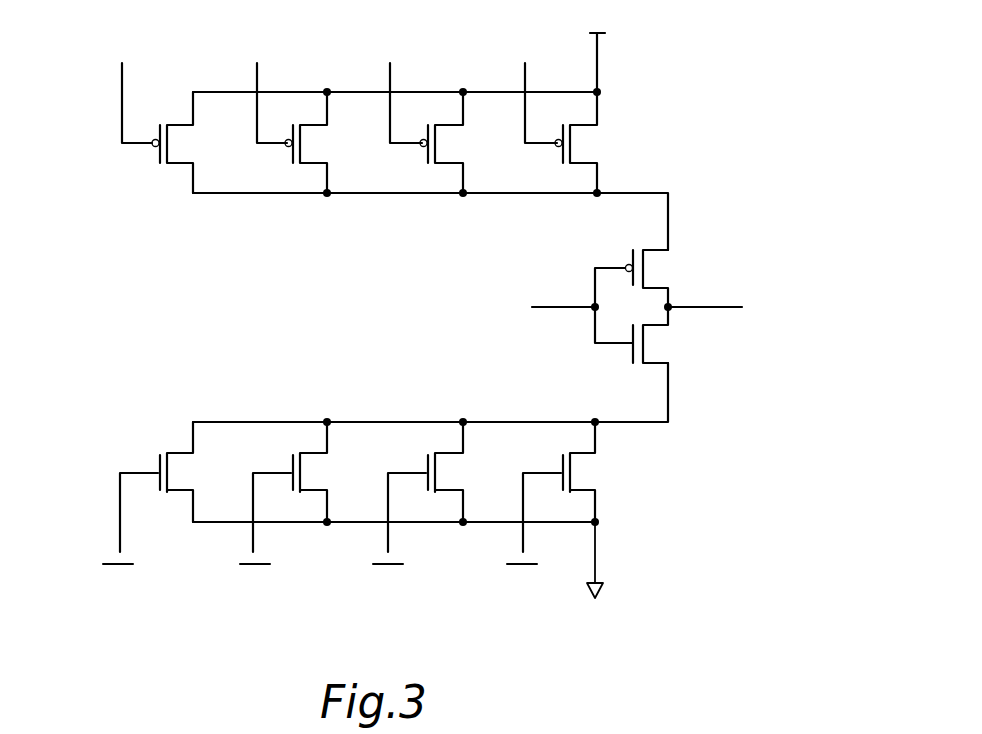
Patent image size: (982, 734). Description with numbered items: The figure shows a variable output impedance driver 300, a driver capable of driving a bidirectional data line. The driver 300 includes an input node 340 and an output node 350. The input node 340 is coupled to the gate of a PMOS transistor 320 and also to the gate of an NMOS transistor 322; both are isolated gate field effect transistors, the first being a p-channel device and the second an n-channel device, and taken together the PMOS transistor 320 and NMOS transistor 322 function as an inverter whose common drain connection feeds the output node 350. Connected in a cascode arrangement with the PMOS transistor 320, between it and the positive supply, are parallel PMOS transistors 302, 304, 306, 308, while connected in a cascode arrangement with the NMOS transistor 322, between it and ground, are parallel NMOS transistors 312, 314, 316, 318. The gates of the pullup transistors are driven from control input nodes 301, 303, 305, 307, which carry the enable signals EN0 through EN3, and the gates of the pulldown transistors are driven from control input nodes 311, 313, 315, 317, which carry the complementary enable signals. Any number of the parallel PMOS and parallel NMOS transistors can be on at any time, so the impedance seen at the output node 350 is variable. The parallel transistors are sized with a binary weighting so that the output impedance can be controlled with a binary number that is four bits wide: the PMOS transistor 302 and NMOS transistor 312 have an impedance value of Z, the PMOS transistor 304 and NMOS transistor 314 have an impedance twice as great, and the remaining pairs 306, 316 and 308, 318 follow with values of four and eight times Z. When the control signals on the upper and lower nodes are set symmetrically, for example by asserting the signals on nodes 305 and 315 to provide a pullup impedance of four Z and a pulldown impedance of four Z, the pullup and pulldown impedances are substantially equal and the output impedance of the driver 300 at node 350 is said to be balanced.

The driver 300 is at (792, 82).
The node 301 is at (120, 77).
The PMOS transistor 302 is at (165, 165).
The node 303 is at (253, 75).
The PMOS transistor 304 is at (300, 163).
The node 305 is at (388, 75).
The PMOS transistor 306 is at (435, 163).
The node 307 is at (522, 75).
The PMOS transistor 308 is at (568, 163).
The node 311 is at (118, 540).
The NMOS transistor 312 is at (165, 452).
The node 313 is at (252, 540).
The NMOS transistor 314 is at (300, 452).
The node 315 is at (388, 540).
The NMOS transistor 316 is at (435, 452).
The node 317 is at (520, 540).
The NMOS transistor 318 is at (570, 452).
The PMOS transistor 320 is at (635, 250).
The NMOS transistor 322 is at (633, 323).
The input node 340 is at (542, 305).
The output node 350 is at (727, 305).